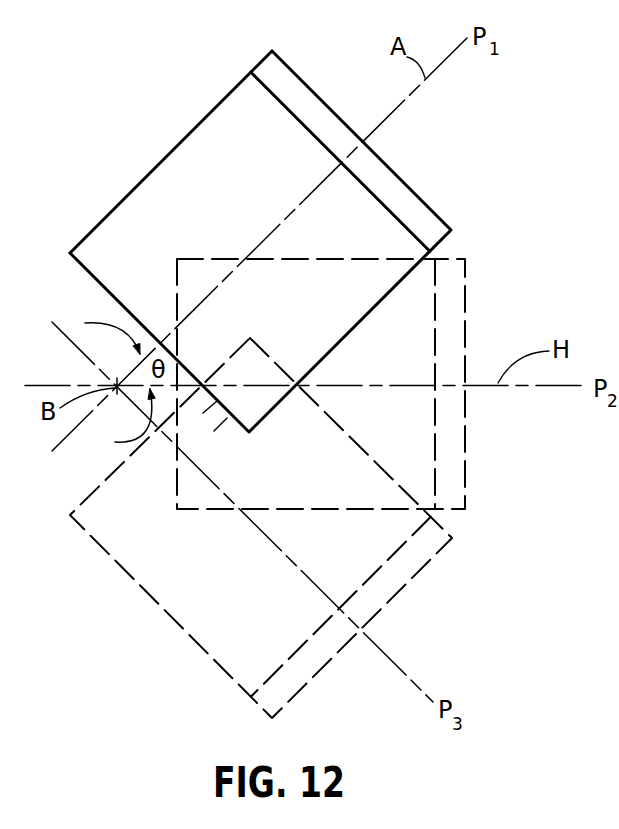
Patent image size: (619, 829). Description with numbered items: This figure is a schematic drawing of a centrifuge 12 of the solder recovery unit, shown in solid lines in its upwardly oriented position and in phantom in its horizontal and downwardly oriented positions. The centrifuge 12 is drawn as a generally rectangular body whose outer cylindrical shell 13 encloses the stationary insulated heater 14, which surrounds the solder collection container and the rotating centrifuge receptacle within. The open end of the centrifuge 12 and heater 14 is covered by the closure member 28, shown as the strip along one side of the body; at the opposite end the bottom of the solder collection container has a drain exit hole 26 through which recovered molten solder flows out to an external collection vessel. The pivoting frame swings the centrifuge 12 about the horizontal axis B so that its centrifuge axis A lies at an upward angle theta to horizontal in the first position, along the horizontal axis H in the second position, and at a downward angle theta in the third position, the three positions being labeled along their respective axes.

The centrifuge 12 is at (119, 160).
The shell 13 is at (222, 102).
The insulated heater 14 is at (183, 139).
The drain exit hole 26 is at (207, 424).
The closure member 28 is at (292, 85).